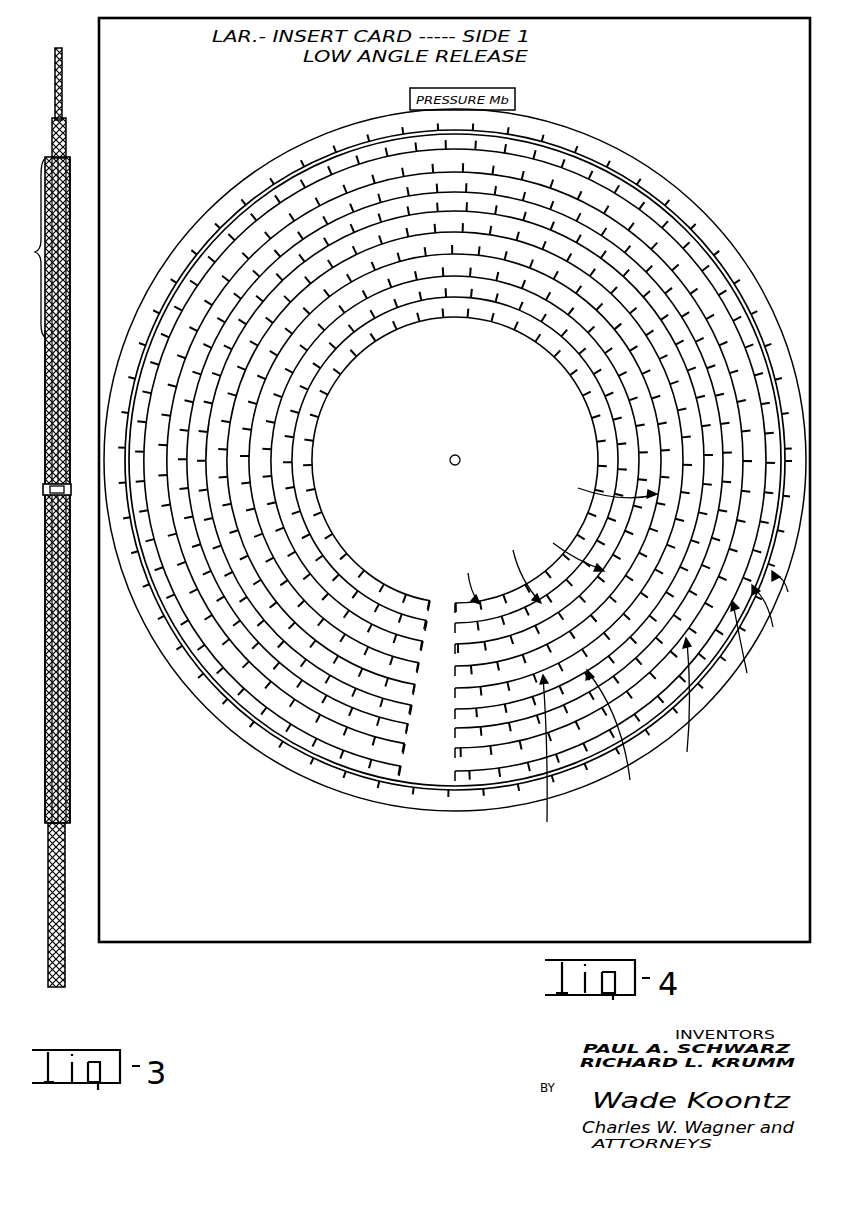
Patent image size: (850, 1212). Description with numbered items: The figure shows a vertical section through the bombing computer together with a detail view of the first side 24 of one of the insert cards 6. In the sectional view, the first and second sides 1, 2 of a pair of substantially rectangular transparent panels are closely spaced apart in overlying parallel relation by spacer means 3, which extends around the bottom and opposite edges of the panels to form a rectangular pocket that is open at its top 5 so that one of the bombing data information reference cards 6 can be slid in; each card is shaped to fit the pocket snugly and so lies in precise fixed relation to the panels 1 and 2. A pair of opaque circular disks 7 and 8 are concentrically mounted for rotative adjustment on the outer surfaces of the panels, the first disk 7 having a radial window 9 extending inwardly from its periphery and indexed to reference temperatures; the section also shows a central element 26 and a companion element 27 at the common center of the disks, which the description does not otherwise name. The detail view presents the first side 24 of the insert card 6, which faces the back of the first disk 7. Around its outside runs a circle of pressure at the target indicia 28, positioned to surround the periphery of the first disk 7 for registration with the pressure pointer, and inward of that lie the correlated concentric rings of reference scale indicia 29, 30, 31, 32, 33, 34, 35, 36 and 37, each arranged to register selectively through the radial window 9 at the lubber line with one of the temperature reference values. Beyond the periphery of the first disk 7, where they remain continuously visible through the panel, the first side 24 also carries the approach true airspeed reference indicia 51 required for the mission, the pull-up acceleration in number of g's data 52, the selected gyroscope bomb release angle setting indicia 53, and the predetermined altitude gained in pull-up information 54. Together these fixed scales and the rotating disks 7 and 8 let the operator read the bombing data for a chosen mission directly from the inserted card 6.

In FIG. 3, the first side of transparent panels 1 is at (47, 142).
In FIG. 3, the second side of transparent panels 2 is at (66, 140).
In FIG. 3, the spacer means 3 is at (60, 986).
In FIG. 3, the open top of pocket 5 is at (64, 118).
In FIG. 3, the insert card 6 is at (60, 52).
In FIG. 4, the insert card 6 is at (440, 942).
In FIG. 3, the first opaque disk 7 is at (45, 388).
In FIG. 3, the second opaque disk 8 is at (63, 218).
In FIG. 3, the radial window 9 is at (32, 248).
In FIG. 4, the first side of insert card 24 is at (204, 886).
In FIG. 3, the pivot 26 is at (43, 488).
In FIG. 4, the pivot 26 is at (460, 456).
In FIG. 3, the pivot rivet 27 is at (70, 488).
In FIG. 4, the pressure at the target indicia 28 is at (787, 592).
In FIG. 4, the reference scale indicia ring 29 is at (771, 612).
In FIG. 4, the reference scale indicia ring 30 is at (743, 648).
In FIG. 4, the reference scale indicia ring 31 is at (687, 703).
In FIG. 4, the reference scale indicia ring 32 is at (612, 734).
In FIG. 4, the reference scale indicia ring 33 is at (540, 757).
In FIG. 4, the reference scale indicia ring 34 is at (602, 490).
In FIG. 4, the reference scale indicia ring 35 is at (568, 548).
In FIG. 4, the reference scale indicia ring 36 is at (518, 571).
In FIG. 4, the reference scale indicia ring 37 is at (464, 582).
In FIG. 4, the true airspeed reference indicia 51 is at (210, 103).
In FIG. 4, the pull-up acceleration data 52 is at (172, 152).
In FIG. 4, the gyroscope bomb release angle setting indicia 53 is at (716, 140).
In FIG. 4, the altitude gained in pull-up information 54 is at (680, 836).